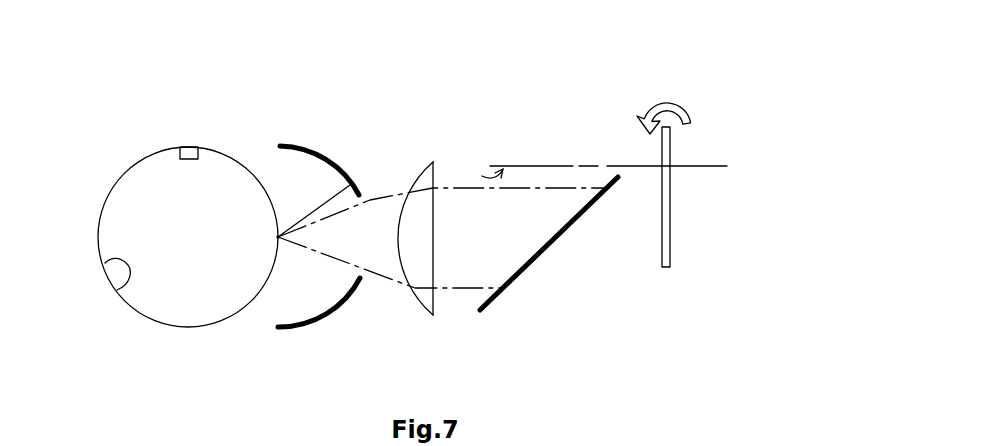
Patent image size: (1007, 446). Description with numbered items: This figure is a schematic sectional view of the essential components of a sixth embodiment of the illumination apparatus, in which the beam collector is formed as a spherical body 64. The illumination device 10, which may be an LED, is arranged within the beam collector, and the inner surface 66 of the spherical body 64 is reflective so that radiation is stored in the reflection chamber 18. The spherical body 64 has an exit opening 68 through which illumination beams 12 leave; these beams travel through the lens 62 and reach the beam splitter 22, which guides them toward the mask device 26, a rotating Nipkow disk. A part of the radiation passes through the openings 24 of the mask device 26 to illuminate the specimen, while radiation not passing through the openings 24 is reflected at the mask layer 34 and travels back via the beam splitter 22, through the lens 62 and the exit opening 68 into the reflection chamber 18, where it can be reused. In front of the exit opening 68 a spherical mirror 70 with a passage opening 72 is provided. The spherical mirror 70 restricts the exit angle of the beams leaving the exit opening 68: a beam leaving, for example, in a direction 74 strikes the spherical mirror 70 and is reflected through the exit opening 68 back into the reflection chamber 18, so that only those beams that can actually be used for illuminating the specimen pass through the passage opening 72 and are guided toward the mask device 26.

The illumination device 10 is at (188, 148).
The illumination beams 12 is at (434, 161).
The reflection chamber 18 is at (165, 252).
The beam splitter 22 is at (577, 220).
The openings 24 is at (509, 166).
The mask device 26 is at (695, 166).
The mask layer 34 is at (482, 176).
The lens 62 is at (428, 298).
The spherical body 64 is at (118, 161).
The inner surface 66 is at (117, 290).
The exit opening 68 is at (280, 231).
The spherical mirror 70 is at (329, 156).
The passage opening 72 is at (383, 218).
The direction 74 is at (313, 210).